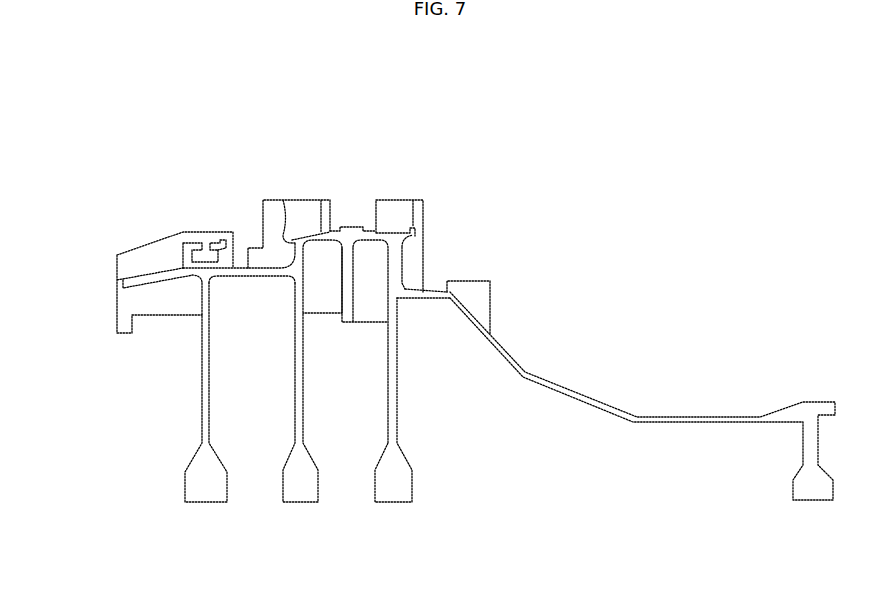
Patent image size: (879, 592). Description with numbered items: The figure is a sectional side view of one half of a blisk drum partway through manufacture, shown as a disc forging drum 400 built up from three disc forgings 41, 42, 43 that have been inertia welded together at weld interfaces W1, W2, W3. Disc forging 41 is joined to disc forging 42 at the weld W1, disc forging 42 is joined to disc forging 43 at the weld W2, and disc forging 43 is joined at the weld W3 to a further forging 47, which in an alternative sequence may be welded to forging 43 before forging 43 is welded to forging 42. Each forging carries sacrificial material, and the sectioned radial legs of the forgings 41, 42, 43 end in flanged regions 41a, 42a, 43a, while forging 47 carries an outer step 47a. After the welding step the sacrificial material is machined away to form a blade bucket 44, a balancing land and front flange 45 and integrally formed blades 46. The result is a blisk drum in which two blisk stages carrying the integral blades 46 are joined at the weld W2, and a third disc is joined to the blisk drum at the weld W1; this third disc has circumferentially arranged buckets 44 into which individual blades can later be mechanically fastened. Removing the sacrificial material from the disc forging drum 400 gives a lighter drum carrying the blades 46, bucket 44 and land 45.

The disc forging drum 400 is at (535, 288).
The disc forging 41 is at (202, 487).
The disc forging 42 is at (298, 488).
The disc forging 43 is at (390, 490).
The flange plate of first leg 41a is at (147, 262).
The rib of second leg 42a is at (272, 208).
The rib of third leg 43a is at (368, 207).
The blade bucket 44 is at (203, 252).
The balancing land and front flange 45 is at (118, 305).
The integrally formed blades 46 is at (395, 221).
The forging 47 is at (587, 400).
The bracket of arm portion 47a is at (478, 292).
The weld interface W1 is at (237, 268).
The weld interface W2 is at (347, 240).
The weld interface W3 is at (428, 292).